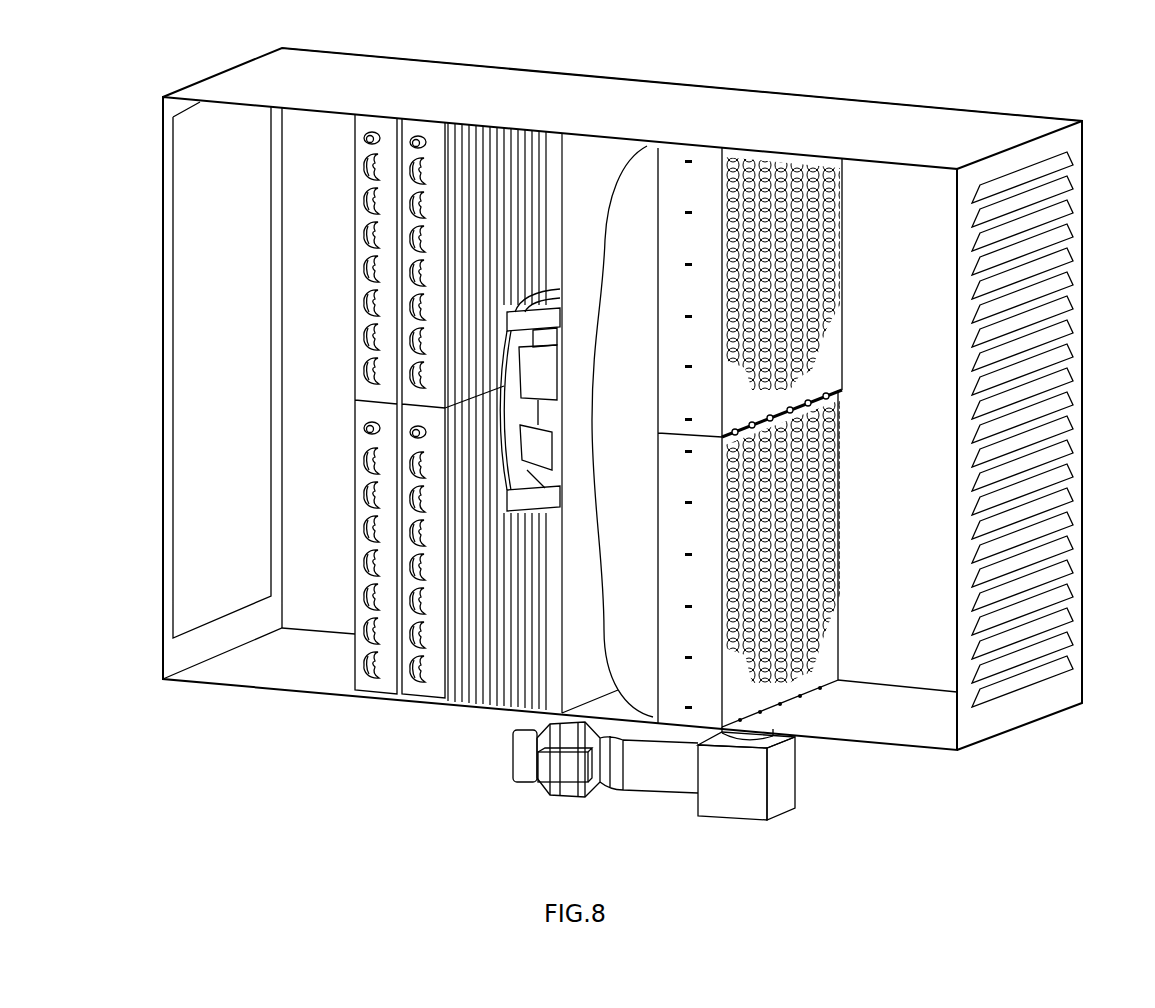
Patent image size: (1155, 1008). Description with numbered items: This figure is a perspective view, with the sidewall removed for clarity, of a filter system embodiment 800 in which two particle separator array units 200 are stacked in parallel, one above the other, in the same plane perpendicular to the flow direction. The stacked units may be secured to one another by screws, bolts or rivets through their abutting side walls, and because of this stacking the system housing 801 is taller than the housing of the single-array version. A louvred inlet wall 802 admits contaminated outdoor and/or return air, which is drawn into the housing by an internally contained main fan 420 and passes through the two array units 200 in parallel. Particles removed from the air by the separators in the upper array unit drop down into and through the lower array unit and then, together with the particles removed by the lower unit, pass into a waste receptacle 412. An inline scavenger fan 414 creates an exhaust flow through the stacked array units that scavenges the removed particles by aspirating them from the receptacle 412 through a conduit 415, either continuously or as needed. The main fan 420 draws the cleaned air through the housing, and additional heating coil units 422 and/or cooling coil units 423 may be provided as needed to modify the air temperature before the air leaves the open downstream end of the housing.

The filter system embodiment 800 is at (737, 56).
The system housing 801 is at (1013, 112).
The louvred inlet wall 802 is at (1066, 684).
The particle separator array unit 200 is at (710, 152).
The main fan 420 is at (555, 302).
The heating coil unit 422 is at (417, 128).
The cooling coil unit 423 is at (367, 124).
The waste receptacle 412 is at (739, 807).
The inline scavenger fan 414 is at (572, 800).
The conduit 415 is at (665, 778).